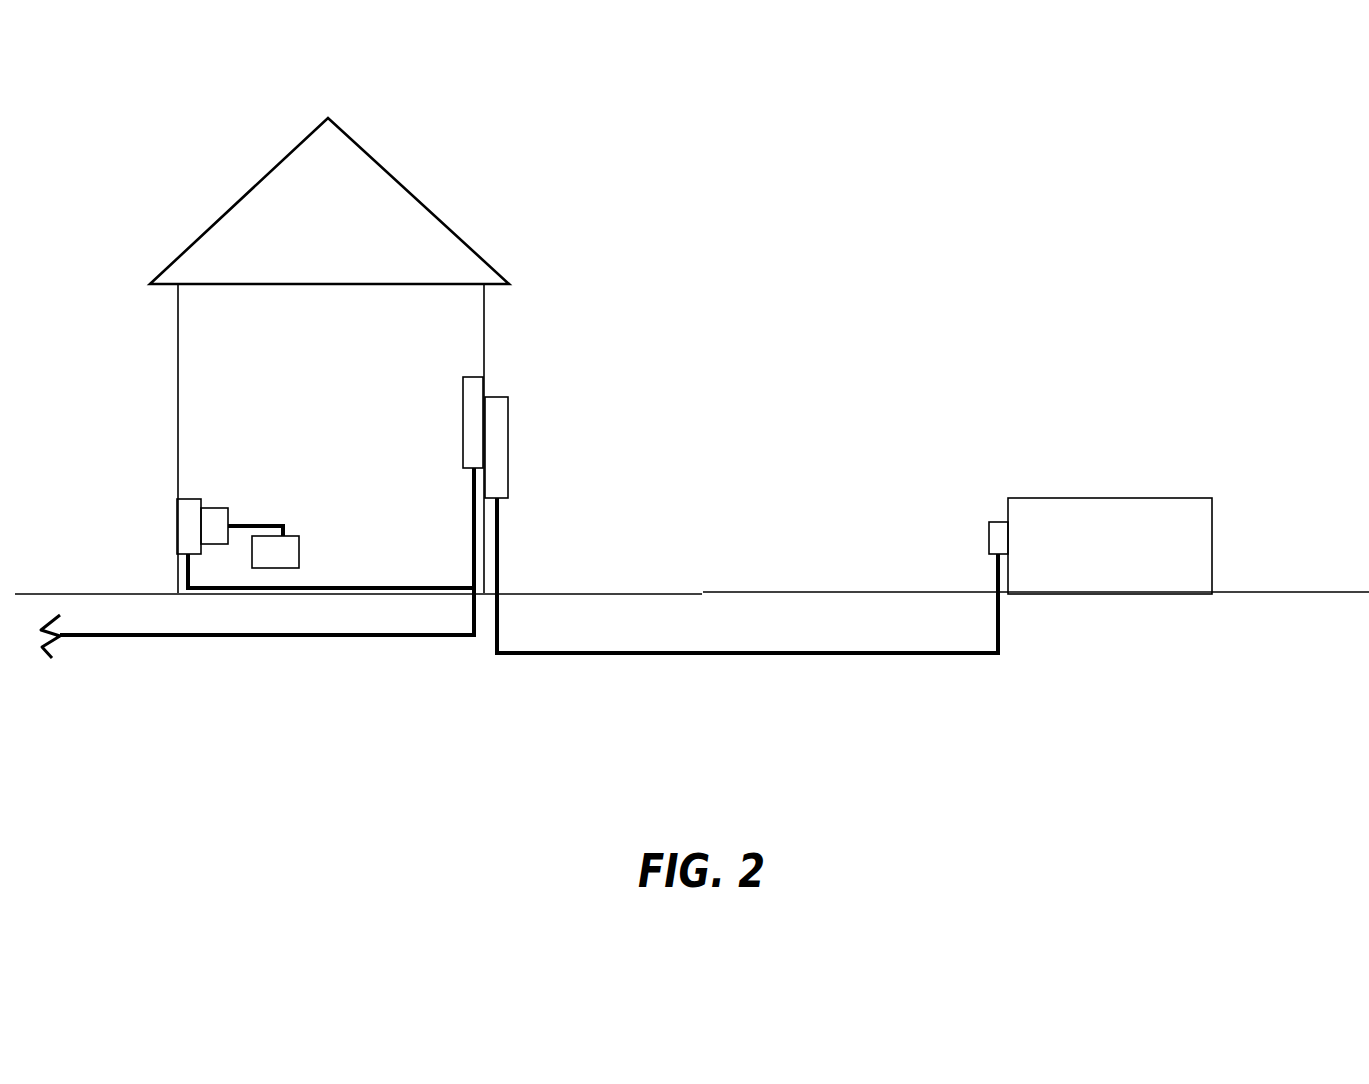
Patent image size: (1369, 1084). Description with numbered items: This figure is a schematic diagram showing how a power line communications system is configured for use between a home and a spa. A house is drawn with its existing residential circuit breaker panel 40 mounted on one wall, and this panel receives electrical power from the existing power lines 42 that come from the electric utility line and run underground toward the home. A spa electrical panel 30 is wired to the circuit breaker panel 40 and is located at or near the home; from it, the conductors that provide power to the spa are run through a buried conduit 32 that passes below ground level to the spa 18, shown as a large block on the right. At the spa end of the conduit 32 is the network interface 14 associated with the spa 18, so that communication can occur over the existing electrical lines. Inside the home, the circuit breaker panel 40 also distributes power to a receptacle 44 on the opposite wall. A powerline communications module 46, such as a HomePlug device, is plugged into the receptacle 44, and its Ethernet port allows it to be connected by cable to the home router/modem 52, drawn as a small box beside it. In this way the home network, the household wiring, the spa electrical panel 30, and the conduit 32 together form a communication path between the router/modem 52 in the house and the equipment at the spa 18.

The in-home network interface 14 is at (997, 543).
The spa 18 is at (1198, 527).
The spa electrical panel 30 is at (497, 415).
The buried conduit 32 is at (753, 655).
The residential circuit breaker panel 40 is at (473, 395).
The power lines 42 is at (150, 638).
The receptacle 44 is at (188, 525).
The powerline communications module 46 is at (217, 518).
The router/modem 52 is at (275, 552).